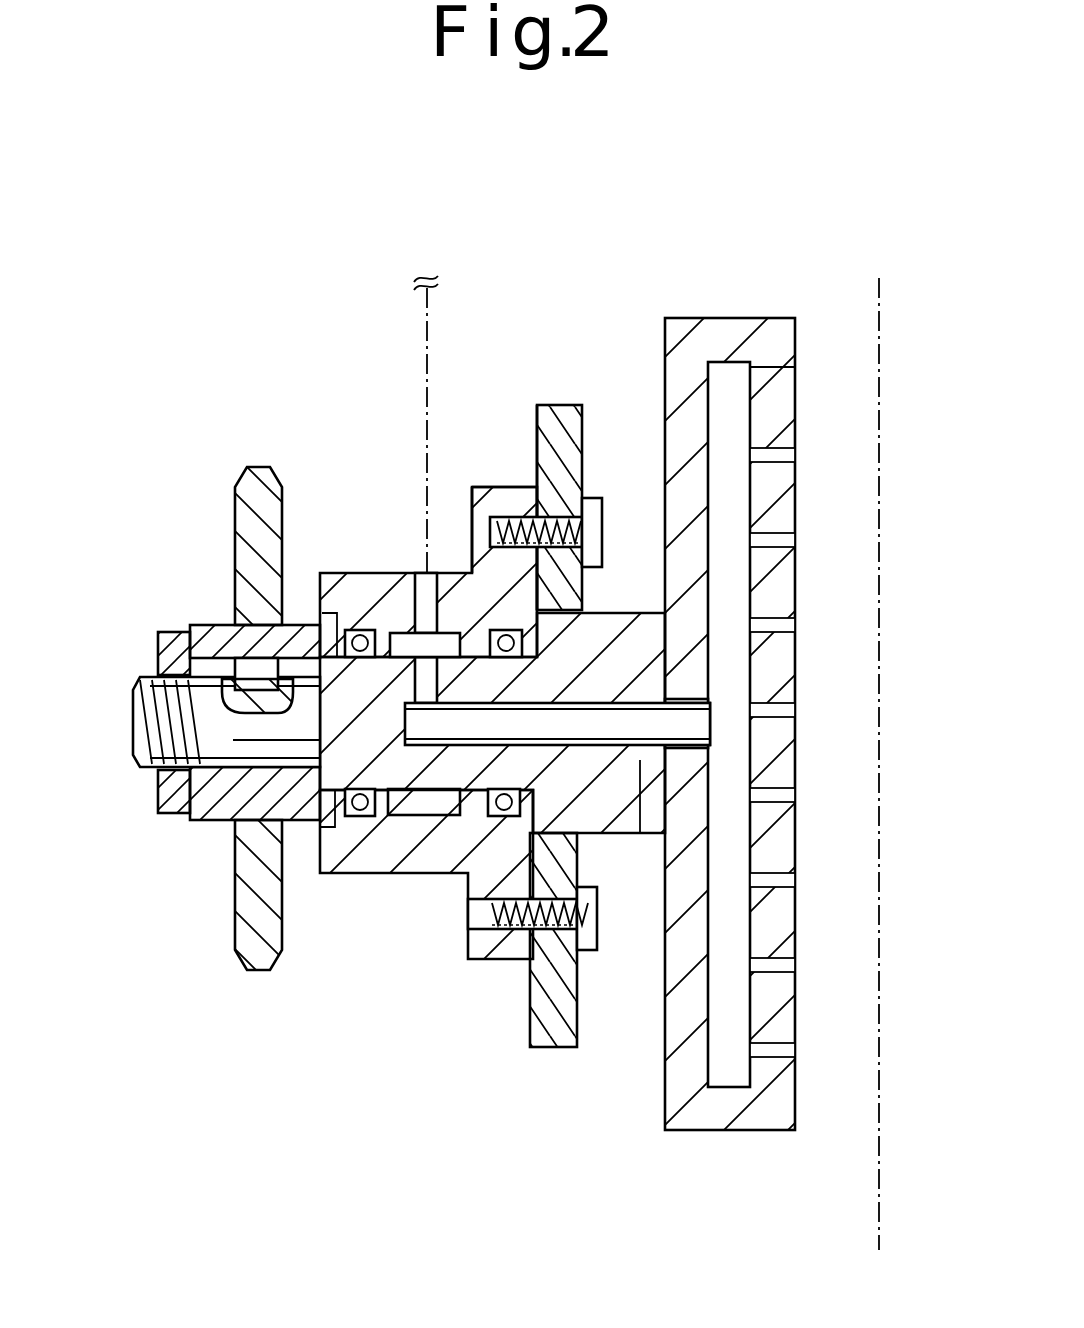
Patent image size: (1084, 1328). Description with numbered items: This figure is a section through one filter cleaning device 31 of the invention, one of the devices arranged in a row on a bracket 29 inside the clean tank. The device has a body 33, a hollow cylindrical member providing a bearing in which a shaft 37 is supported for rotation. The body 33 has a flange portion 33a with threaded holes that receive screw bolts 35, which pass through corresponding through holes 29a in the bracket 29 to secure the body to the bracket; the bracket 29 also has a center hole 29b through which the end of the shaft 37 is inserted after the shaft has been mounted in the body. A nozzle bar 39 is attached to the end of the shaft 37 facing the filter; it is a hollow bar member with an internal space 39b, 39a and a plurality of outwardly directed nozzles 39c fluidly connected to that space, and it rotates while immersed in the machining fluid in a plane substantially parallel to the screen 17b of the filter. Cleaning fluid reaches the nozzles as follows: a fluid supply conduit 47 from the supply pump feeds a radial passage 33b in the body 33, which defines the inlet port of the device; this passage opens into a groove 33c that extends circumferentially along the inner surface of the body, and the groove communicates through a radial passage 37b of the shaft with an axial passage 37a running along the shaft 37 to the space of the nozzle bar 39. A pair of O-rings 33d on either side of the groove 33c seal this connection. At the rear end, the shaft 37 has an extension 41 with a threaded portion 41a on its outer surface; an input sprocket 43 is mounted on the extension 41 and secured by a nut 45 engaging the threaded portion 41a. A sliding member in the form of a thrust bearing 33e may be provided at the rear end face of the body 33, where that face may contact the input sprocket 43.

The screen 17b is at (881, 330).
The bracket 29 is at (537, 410).
The through holes 29a is at (550, 483).
The center hole 29b is at (533, 838).
The filter cleaning device 31 is at (647, 262).
The body 33 is at (338, 573).
The flange portion 33a is at (472, 498).
The radial passage 33b is at (433, 575).
The groove 33c is at (396, 633).
The O-rings 33d is at (357, 818).
The thrust bearing 33e is at (325, 830).
The screw bolts 35 is at (598, 498).
The shaft 37 is at (648, 612).
The axial passage 37a is at (644, 615).
The radial passage 37b is at (420, 816).
The nozzle bar 39 is at (778, 318).
The space 39a is at (720, 718).
The space 39b is at (716, 380).
The nozzles 39c is at (797, 455).
The extension 41 is at (195, 822).
The threaded portion 41a is at (140, 768).
The input sprocket 43 is at (233, 507).
The nut 45 is at (160, 632).
The fluid supply conduit 47 is at (425, 312).